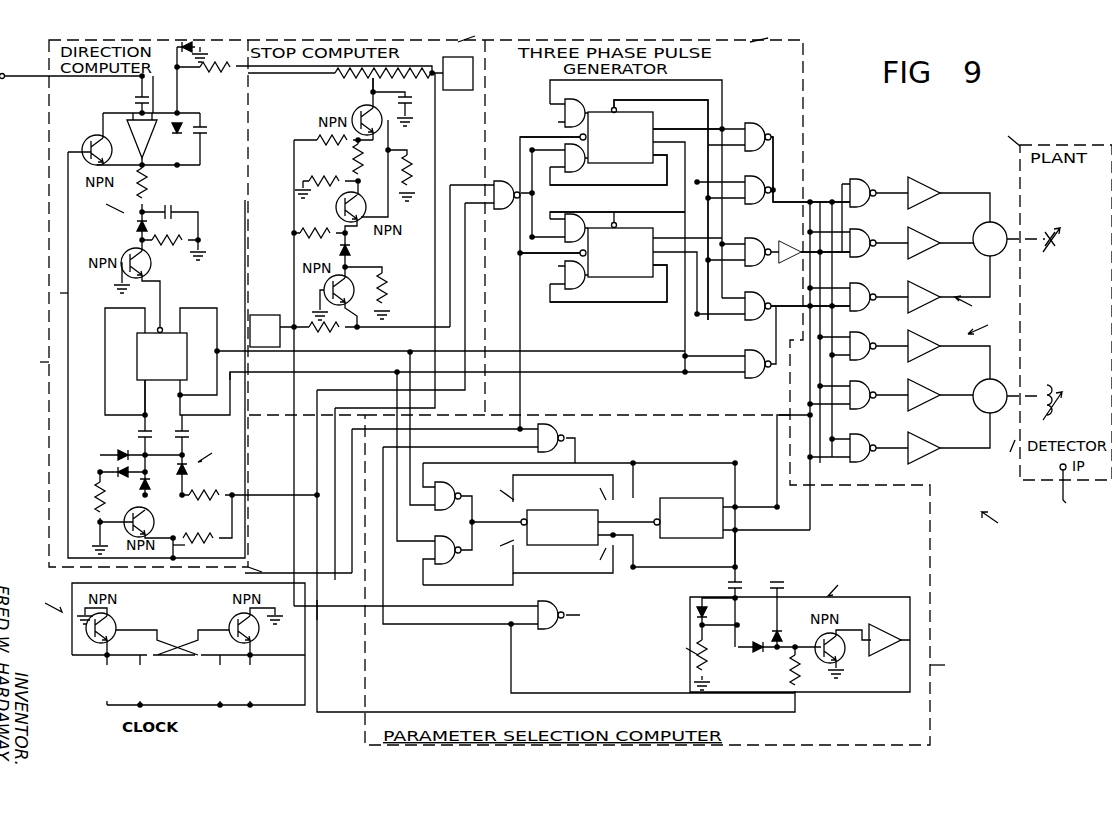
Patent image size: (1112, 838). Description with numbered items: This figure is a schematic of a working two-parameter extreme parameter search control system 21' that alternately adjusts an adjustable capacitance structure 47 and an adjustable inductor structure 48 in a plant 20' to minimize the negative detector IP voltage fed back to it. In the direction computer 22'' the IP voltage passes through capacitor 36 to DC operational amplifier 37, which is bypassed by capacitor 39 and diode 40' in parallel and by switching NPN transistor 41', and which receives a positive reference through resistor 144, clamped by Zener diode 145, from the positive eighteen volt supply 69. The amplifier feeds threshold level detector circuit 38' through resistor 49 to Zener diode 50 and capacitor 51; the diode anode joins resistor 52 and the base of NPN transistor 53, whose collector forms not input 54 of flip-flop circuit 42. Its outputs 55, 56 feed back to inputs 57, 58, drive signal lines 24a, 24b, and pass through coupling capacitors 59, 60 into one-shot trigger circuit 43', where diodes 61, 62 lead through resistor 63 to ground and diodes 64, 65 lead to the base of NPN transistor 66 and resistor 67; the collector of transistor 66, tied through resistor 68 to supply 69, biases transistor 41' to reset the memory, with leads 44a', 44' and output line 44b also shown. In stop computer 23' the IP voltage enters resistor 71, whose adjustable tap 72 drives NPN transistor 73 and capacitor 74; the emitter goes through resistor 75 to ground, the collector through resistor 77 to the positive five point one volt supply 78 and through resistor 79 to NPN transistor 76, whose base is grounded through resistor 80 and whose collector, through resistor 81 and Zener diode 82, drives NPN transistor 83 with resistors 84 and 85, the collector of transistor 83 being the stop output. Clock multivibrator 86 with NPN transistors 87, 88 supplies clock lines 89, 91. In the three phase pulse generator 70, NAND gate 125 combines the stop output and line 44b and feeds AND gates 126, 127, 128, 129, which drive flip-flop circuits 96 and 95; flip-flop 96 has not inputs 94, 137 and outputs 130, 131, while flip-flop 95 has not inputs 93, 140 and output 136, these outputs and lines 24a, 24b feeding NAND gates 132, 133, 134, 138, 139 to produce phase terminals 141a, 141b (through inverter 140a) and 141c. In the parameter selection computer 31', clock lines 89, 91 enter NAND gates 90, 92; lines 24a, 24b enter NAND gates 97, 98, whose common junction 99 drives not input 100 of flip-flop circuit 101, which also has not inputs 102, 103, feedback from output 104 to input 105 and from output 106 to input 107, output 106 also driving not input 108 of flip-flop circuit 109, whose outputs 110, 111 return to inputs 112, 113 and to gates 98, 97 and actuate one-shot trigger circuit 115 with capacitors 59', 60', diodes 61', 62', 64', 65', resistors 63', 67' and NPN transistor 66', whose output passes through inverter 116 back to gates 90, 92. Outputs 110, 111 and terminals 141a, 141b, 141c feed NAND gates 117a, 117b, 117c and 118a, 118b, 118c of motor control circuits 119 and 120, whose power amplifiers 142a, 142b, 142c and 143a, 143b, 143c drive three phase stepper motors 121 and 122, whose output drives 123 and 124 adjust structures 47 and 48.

The capacitor 36 is at (132, 98).
The switching NPN transistor 41' is at (85, 140).
The DC operational amplifier 37 is at (138, 136).
The diode 40' is at (164, 143).
The capacitor 39 is at (211, 127).
The resistor 49 is at (157, 183).
The capacitor 51 is at (170, 210).
The threshold level detector circuit 38' is at (104, 203).
The Zener diode 50 is at (136, 228).
The resistor 52 is at (168, 248).
The NPN transistor 53 is at (152, 270).
The not terminal input 54 is at (165, 318).
The direction computer circuit 44a' is at (82, 293).
The direction computer 22'' is at (30, 353).
The input terminal 57 is at (138, 338).
The input terminal 58 is at (183, 338).
The flip-flop circuit 42 is at (136, 360).
The output terminal 56 is at (186, 392).
The output terminal 55 is at (142, 412).
The signal coupling capacitor 59 is at (131, 425).
The signal coupling capacitor 60 is at (199, 425).
The diode 62 is at (109, 447).
The diode 61 is at (124, 479).
The one-shot trigger circuit 43' is at (216, 449).
The diode 65 is at (198, 464).
The diode 64 is at (157, 484).
The resistor 67 is at (212, 485).
The resistor 63 is at (89, 506).
The NPN transistor 66 is at (163, 518).
The resistor 68 is at (213, 540).
The lead 44' is at (193, 546).
The signal line 44b is at (270, 578).
The clock signal source multivibrator circuit 86 is at (41, 602).
The NPN transistor 87 is at (120, 618).
The NPN transistor 88 is at (228, 618).
The Zener diode 145 is at (208, 50).
The resistor 144 is at (220, 72).
The stop computer 23' is at (479, 30).
The resistor 71 is at (330, 78).
The adjustable tap 72 is at (371, 82).
The NPN transistor 73 is at (352, 110).
The capacitor 74 is at (413, 90).
The voltage supply 69 is at (456, 92).
The resistor 77 is at (328, 146).
The resistor 80 is at (353, 163).
The resistor 79 is at (346, 183).
The NPN transistor 76 is at (336, 208).
The resistor 75 is at (416, 163).
The resistor 81 is at (320, 223).
The Zener diode 82 is at (360, 250).
The NPN transistor 83 is at (324, 290).
The resistor 84 is at (395, 288).
The resistor 85 is at (338, 333).
The voltage supply 78 is at (265, 321).
The signal output line 24b is at (280, 353).
The signal output line 24a is at (282, 375).
The clock signal line 91 is at (335, 586).
The clock signal line 89 is at (322, 612).
The three phase pulse generator circuit 70 is at (770, 31).
The AND gate 126 is at (569, 103).
The not input terminal 137 is at (611, 108).
The output terminal 131 is at (657, 126).
The not terminal input 94 is at (553, 129).
The NAND gate 125 is at (504, 183).
The AND gate 127 is at (588, 166).
The output terminal 130 is at (608, 171).
The flip-flop circuit 96 is at (620, 137).
The AND gate 128 is at (588, 220).
The not input terminal 140 is at (617, 213).
The flip-flop circuit 95 is at (620, 252).
The AND gate 129 is at (590, 280).
The output terminal 136 is at (615, 273).
The not terminal input 93 is at (553, 245).
The NAND gate 132 is at (750, 120).
The NAND gate 138 is at (755, 179).
The NAND gate 133 is at (755, 240).
The NAND gate 134 is at (748, 320).
The NAND gate 139 is at (752, 378).
The three phase output terminal 141a is at (800, 200).
The signal inverter 140a is at (786, 262).
The three phase output terminal 141b is at (808, 268).
The three phase output terminal 141c is at (809, 294).
The NAND gate 117a is at (862, 178).
The NAND gate 117b is at (862, 229).
The NAND gate 117c is at (862, 283).
The NAND gate 118a is at (862, 334).
The NAND gate 118b is at (862, 384).
The NAND gate 118c is at (862, 438).
The phase signal power amplifying circuit 142a is at (920, 179).
The phase signal power amplifying circuit 142b is at (920, 231).
The phase signal power amplifying circuit 142c is at (920, 284).
The phase signal power amplifier 143a is at (920, 334).
The phase signal power amplifier 143b is at (920, 385).
The phase signal power amplifier 143c is at (922, 457).
The three phase stepper motor 121 is at (973, 233).
The output drive 123 is at (1015, 248).
The three phase stepper motor 122 is at (973, 392).
The motor control circuit 119 is at (980, 307).
The motor control circuit 120 is at (994, 328).
The output drive 124 is at (1008, 454).
The adjustable capacitance structure 47 is at (1062, 249).
The adjustable inductor structure 48 is at (1061, 410).
The plant 20' is at (1003, 133).
The extreme parameter search control system 21' is at (1005, 523).
The parameter selection computer 31' is at (951, 665).
The NAND gate 92 is at (568, 433).
The NAND gate 98 is at (452, 487).
The NAND gate 97 is at (452, 560).
The common junction 99 is at (456, 523).
The not input terminal 100 is at (518, 520).
The input terminal 105 is at (495, 490).
The input terminal 107 is at (494, 548).
The not terminal input 103 is at (563, 487).
The output terminal 104 is at (589, 486).
The flip-flop circuit 101 is at (562, 527).
The not terminal input 102 is at (563, 563).
The output terminal 106 is at (589, 565).
The not input terminal 108 is at (650, 520).
The flip-flop circuit 109 is at (691, 518).
The input terminal 112 is at (653, 480).
The input terminal 113 is at (666, 551).
The output terminal 110 is at (735, 510).
The output terminal 111 is at (735, 538).
The NAND gate 90 is at (558, 628).
The signal coupling capacitor 60' is at (750, 574).
The signal coupling capacitor 59' is at (795, 576).
The one-shot trigger circuit 115 is at (849, 582).
The diode 62' is at (681, 608).
The signal inverter circuit 116 is at (878, 630).
The diode 61' is at (716, 655).
The resistor 63' is at (679, 648).
The diode 65' is at (750, 660).
The diode 64' is at (792, 633).
The NPN transistor 66' is at (847, 654).
The resistor 67' is at (777, 674).